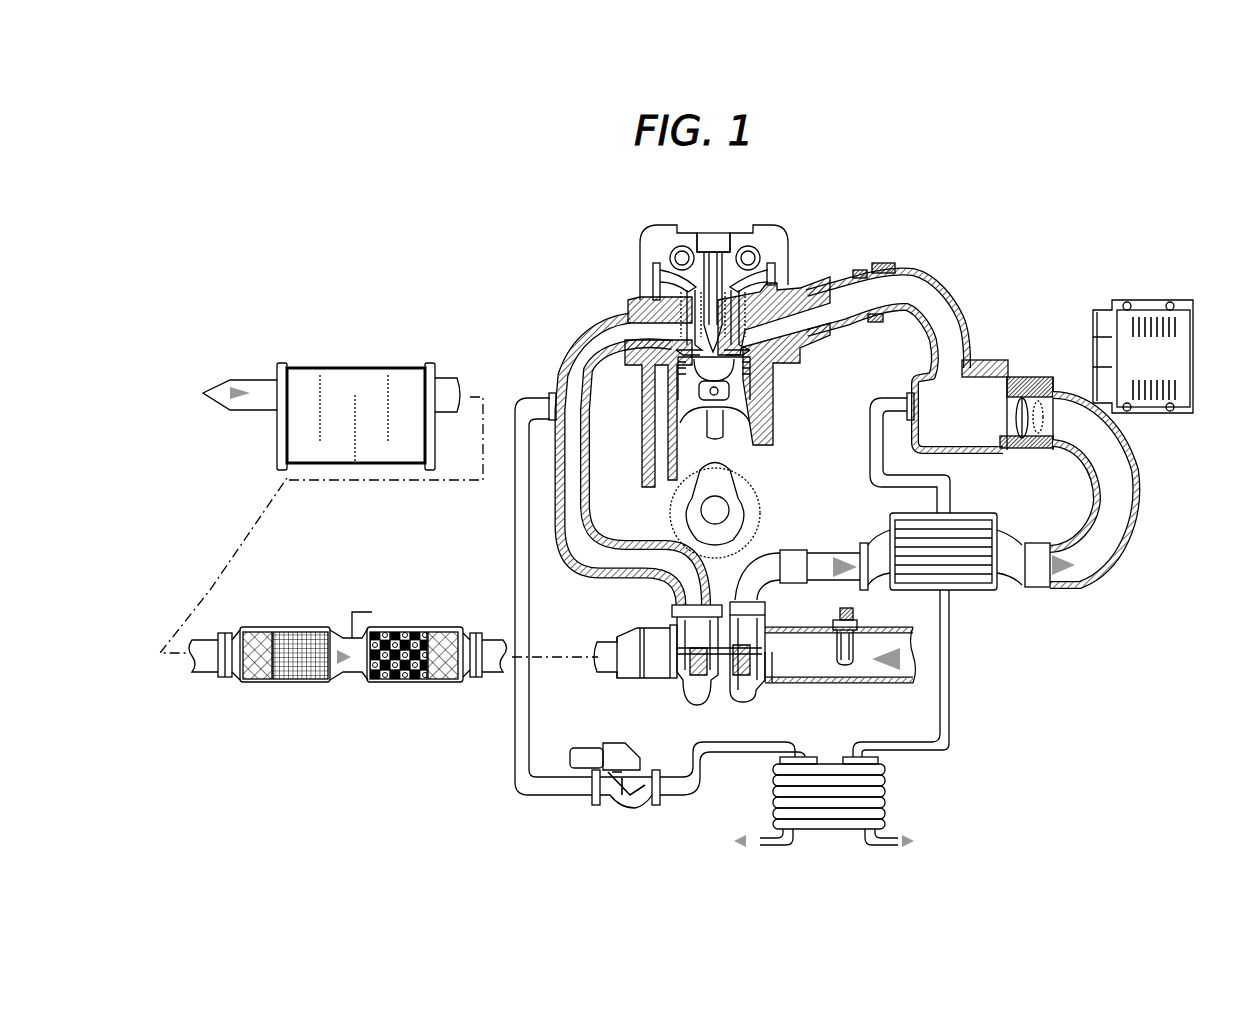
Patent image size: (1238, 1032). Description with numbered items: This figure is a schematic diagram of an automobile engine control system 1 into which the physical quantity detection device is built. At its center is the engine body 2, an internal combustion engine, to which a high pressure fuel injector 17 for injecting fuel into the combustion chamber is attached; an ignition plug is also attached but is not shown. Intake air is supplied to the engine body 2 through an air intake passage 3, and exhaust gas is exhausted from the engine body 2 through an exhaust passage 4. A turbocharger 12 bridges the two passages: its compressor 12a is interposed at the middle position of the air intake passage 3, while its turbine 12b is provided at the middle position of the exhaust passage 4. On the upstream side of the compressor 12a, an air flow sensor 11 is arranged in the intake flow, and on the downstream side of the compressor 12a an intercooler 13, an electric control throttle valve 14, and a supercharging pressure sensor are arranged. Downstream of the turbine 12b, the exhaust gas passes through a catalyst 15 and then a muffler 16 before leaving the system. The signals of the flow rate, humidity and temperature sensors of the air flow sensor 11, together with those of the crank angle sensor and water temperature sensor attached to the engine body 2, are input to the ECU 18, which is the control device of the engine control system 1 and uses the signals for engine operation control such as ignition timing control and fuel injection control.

The engine control system 1 is at (889, 193).
The engine body 2 is at (648, 232).
The air intake passage 3 is at (850, 683).
The exhaust passage 4 is at (493, 678).
The air flow sensor 11 is at (832, 625).
The turbocharger 12 is at (718, 702).
The compressor 12a is at (743, 690).
The turbine 12b is at (693, 690).
The intercooler 13 is at (988, 590).
The electric control throttle valve 14 is at (1017, 377).
The catalyst 15 is at (405, 682).
The muffler 16 is at (355, 368).
The high pressure fuel injector 17 is at (713, 233).
The ECU 18 is at (1185, 300).